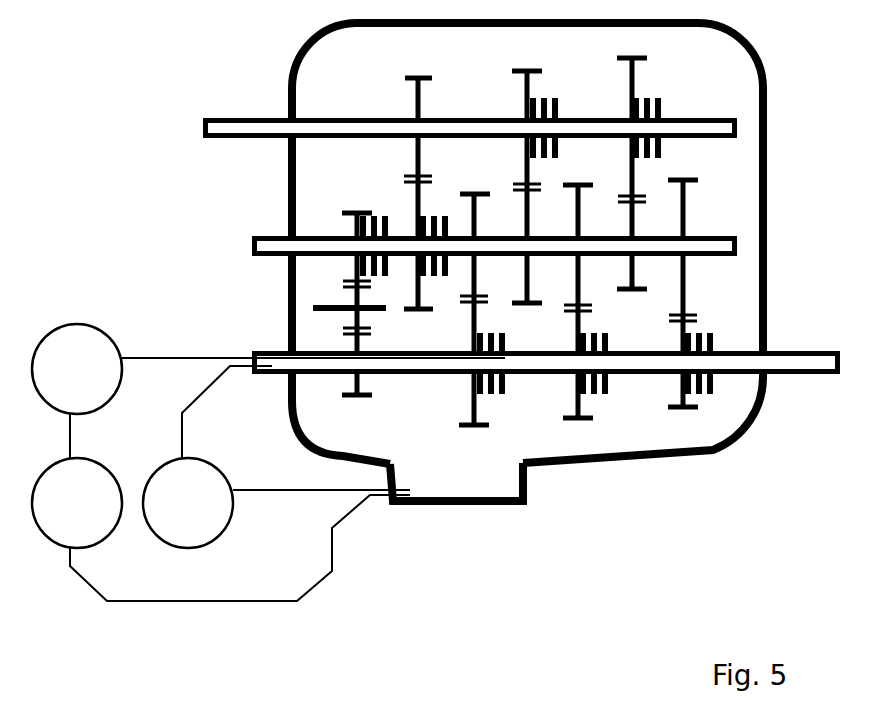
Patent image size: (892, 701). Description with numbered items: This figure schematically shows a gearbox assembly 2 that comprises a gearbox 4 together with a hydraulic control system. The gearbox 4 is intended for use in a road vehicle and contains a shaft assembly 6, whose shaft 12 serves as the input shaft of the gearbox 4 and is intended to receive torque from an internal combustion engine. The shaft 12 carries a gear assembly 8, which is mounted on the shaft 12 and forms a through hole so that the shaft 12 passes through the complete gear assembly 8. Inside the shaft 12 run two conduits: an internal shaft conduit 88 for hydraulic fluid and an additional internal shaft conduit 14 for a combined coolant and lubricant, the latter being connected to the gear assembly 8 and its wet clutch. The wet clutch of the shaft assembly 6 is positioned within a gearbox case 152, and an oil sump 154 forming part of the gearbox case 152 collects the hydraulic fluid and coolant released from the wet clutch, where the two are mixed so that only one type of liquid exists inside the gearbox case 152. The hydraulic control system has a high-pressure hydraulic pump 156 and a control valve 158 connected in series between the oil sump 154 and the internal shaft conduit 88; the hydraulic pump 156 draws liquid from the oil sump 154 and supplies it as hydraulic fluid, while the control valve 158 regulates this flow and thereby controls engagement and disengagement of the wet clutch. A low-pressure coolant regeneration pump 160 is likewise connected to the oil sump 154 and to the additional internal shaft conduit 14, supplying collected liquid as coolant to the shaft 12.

The gearbox assembly 2 is at (188, 180).
The gearbox 4 is at (292, 57).
The gearbox case 152 is at (288, 97).
The oil sump 154 is at (525, 497).
The shaft assembly 6 is at (443, 398).
The gear assembly 8 is at (507, 416).
The shaft 12 is at (632, 372).
The additional internal shaft conduit 14 is at (670, 362).
The internal shaft conduit 88 is at (388, 358).
The control valve 158 is at (79, 323).
The high-pressure hydraulic pump 156 is at (107, 532).
The low-pressure coolant regeneration pump 160 is at (200, 545).